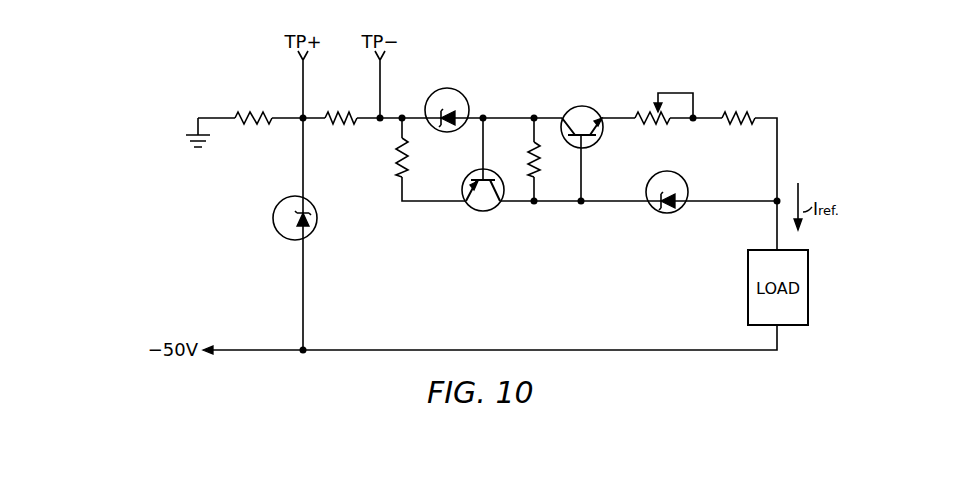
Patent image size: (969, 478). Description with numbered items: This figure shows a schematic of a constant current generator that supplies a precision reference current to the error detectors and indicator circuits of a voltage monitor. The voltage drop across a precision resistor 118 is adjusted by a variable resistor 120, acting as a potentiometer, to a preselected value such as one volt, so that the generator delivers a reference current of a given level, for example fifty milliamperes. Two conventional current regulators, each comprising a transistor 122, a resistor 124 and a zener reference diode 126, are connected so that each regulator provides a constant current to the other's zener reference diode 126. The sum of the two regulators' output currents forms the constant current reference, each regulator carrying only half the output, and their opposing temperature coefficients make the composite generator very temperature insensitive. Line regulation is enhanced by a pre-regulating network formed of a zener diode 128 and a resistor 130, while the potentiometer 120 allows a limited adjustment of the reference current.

The precision resistor 118 is at (356, 112).
The variable resistor 120 is at (650, 108).
The transistor 122 is at (575, 110).
The resistor 124 is at (396, 158).
The zener reference diode 126 is at (459, 101).
The zener diode 128 is at (275, 220).
The resistor 130 is at (264, 112).